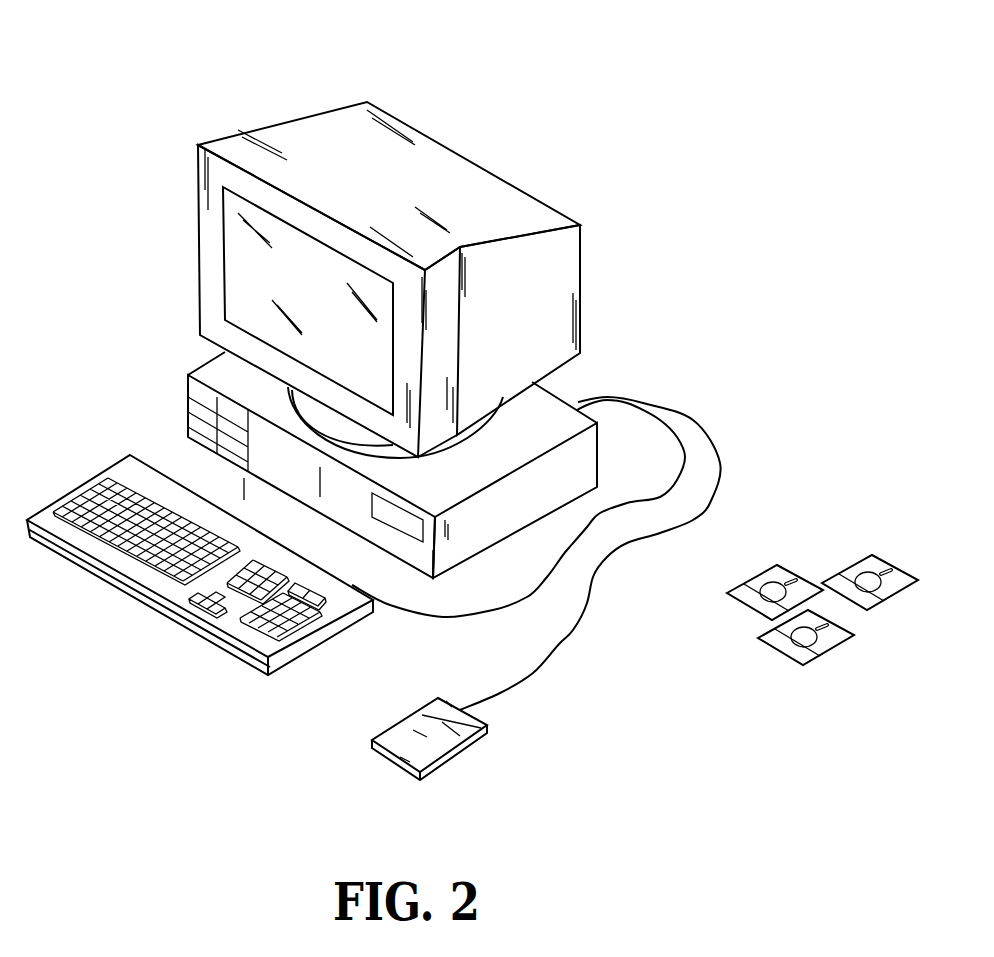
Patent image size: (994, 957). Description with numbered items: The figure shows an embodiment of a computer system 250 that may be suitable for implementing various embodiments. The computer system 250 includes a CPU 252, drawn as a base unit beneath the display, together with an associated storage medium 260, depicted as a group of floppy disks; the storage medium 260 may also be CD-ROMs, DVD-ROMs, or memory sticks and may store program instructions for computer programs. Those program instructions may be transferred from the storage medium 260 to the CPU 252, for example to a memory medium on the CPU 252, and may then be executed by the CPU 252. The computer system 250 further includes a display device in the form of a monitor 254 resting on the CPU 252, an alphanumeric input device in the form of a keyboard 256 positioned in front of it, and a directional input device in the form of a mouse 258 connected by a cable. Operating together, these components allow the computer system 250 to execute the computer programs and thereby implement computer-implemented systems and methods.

The computer system 250 is at (131, 78).
The CPU 252 is at (207, 373).
The monitor 254 is at (473, 162).
The keyboard 256 is at (148, 593).
The mouse 258 is at (400, 757).
The storage medium 260 is at (790, 657).